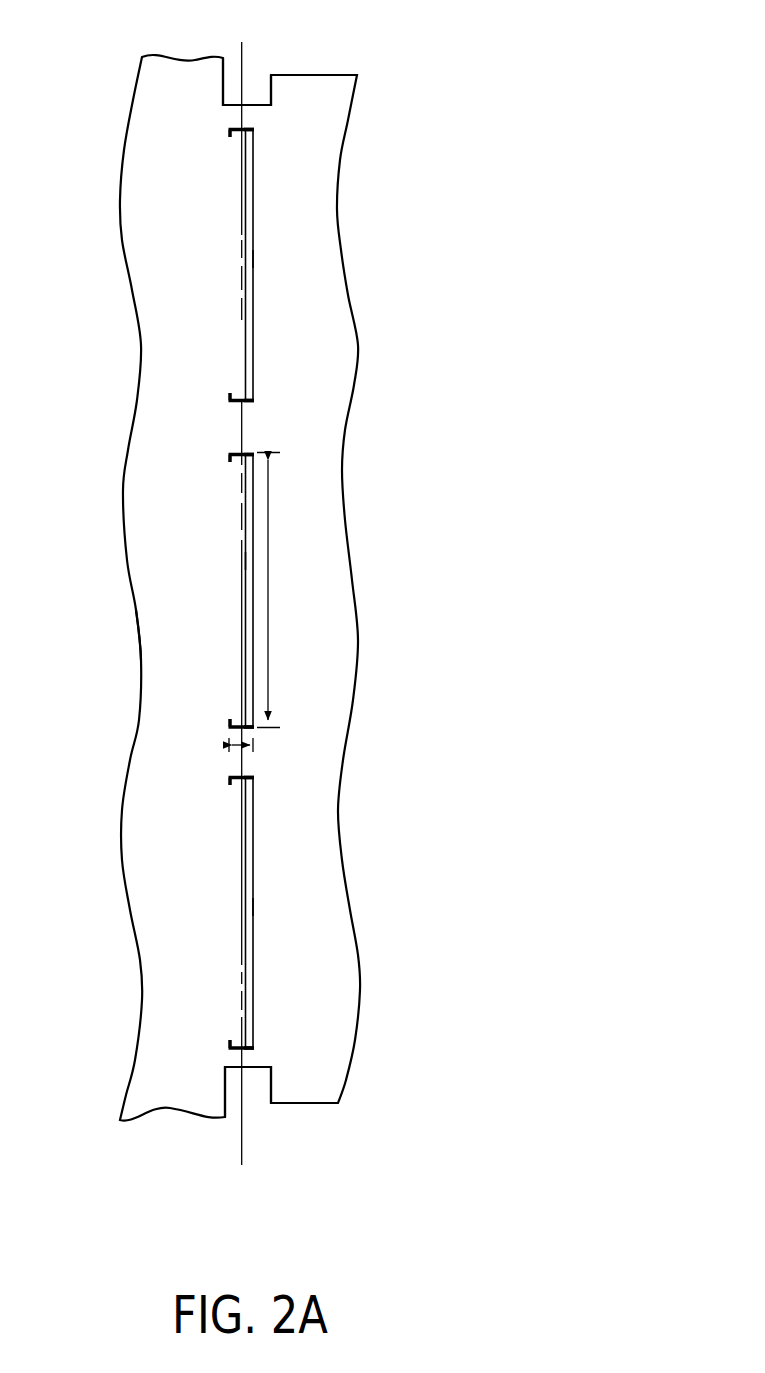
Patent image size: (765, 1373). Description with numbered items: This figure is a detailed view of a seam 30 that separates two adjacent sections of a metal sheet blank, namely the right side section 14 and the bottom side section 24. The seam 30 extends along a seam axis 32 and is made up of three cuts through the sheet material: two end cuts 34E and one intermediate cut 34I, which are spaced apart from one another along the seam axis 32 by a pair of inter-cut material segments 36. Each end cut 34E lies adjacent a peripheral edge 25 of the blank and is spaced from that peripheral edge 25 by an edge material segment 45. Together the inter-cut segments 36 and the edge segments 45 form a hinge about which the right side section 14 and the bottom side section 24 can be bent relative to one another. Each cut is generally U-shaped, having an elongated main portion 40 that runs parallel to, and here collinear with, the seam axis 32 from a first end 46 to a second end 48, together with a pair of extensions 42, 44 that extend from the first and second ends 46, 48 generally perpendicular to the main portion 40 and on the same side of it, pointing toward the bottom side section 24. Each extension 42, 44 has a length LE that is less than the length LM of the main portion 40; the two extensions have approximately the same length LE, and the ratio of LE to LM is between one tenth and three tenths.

The right side section 14 is at (354, 388).
The bottom side section 24 is at (139, 701).
The peripheral edge 25 is at (254, 102).
The seam 30 is at (260, 240).
The seam axis 32 is at (240, 50).
The end cut 34E is at (255, 298).
The intermediate cut 34I is at (245, 600).
The inter-cut material segment 36 is at (224, 427).
The main portion 40 is at (255, 258).
The extension 42 is at (232, 135).
The extension 44 is at (230, 397).
The edge material segment 45 is at (255, 118).
The first end 46 is at (253, 130).
The second end 48 is at (253, 400).
The length of the main portion LM is at (270, 520).
The length of the extension LE is at (250, 748).